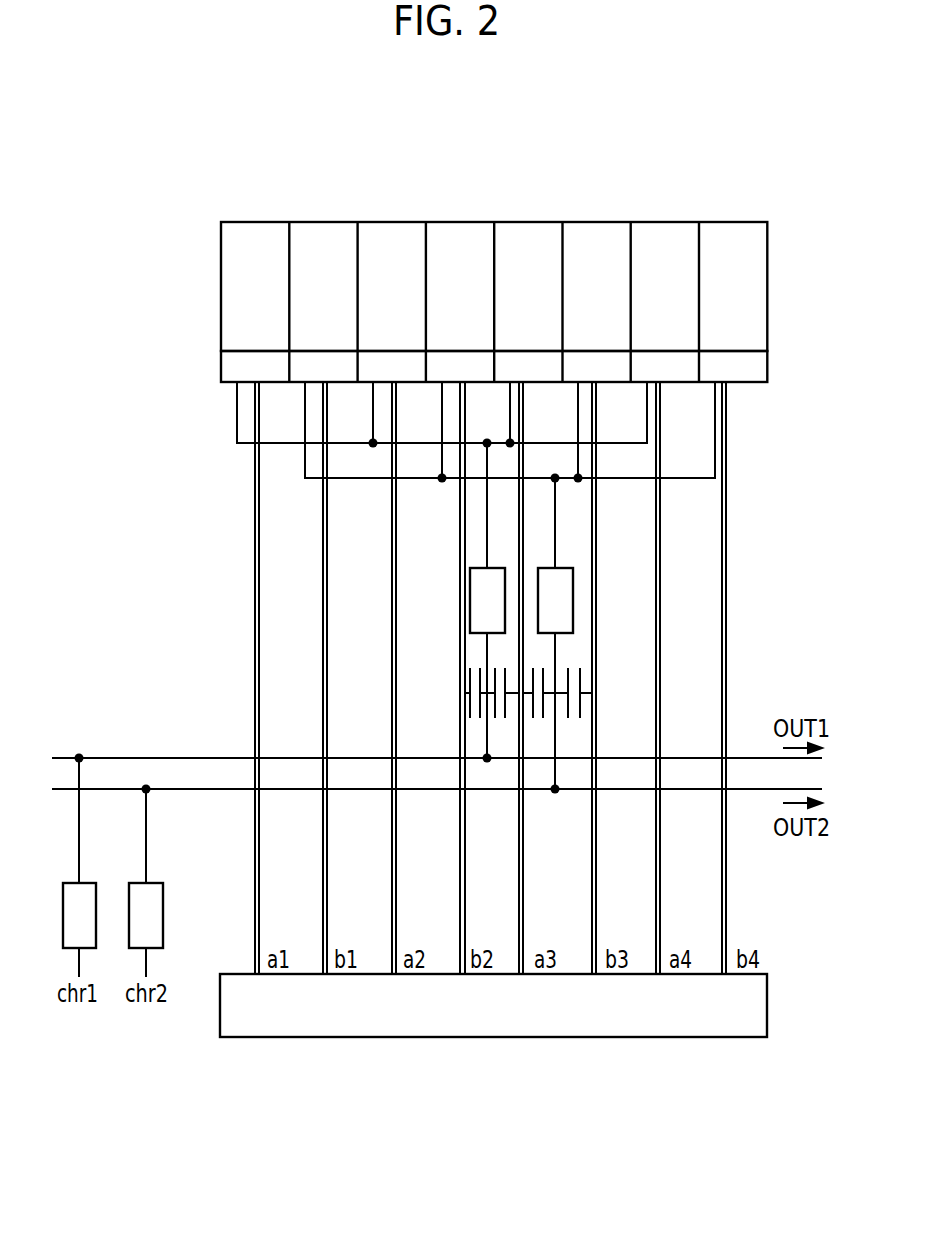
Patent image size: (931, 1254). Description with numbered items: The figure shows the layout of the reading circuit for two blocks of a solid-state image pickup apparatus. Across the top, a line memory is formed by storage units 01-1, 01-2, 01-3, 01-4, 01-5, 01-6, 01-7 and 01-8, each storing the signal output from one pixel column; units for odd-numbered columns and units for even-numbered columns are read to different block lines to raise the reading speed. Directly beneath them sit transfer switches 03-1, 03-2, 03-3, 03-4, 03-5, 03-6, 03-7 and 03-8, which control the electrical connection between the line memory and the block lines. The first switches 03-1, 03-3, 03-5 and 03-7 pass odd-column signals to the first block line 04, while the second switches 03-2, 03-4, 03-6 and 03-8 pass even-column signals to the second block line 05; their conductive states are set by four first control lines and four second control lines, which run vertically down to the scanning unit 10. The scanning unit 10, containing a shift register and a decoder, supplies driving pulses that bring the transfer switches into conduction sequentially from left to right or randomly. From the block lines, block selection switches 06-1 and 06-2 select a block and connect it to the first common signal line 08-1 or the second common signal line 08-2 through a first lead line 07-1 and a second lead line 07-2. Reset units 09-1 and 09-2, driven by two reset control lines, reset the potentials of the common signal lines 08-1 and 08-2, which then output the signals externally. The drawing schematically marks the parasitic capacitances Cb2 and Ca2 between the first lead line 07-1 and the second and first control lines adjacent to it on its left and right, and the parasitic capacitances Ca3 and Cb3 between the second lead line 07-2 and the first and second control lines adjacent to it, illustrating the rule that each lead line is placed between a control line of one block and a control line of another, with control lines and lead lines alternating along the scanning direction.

The storage unit 01-1 is at (255, 286).
The storage unit 01-2 is at (323, 286).
The storage unit 01-3 is at (392, 286).
The storage unit 01-4 is at (460, 286).
The storage unit 01-5 is at (528, 286).
The storage unit 01-6 is at (597, 286).
The storage unit 01-7 is at (665, 286).
The storage unit 01-8 is at (733, 286).
The transfer switch 03-1 is at (255, 366).
The transfer switch 03-2 is at (323, 366).
The transfer switch 03-3 is at (392, 366).
The transfer switch 03-4 is at (460, 366).
The transfer switch 03-5 is at (528, 366).
The transfer switch 03-6 is at (597, 366).
The transfer switch 03-7 is at (665, 366).
The transfer switch 03-8 is at (733, 366).
The first block line 04 is at (442, 415).
The second block line 05 is at (510, 432).
The block selection switch 06-1 is at (470, 603).
The block selection switch 06-2 is at (573, 596).
The first lead line 07-1 is at (488, 656).
The second lead line 07-2 is at (556, 656).
The first common signal line 08-1 is at (437, 747).
The second common signal line 08-2 is at (437, 778).
The reset unit 09-1 is at (87, 880).
The reset unit 09-2 is at (154, 880).
The scanning unit 10 is at (278, 1037).
The parasitic capacitance Cb2 is at (467, 712).
The parasitic capacitance Ca2 is at (498, 716).
The parasitic capacitance Ca3 is at (537, 716).
The parasitic capacitance Cb3 is at (585, 713).